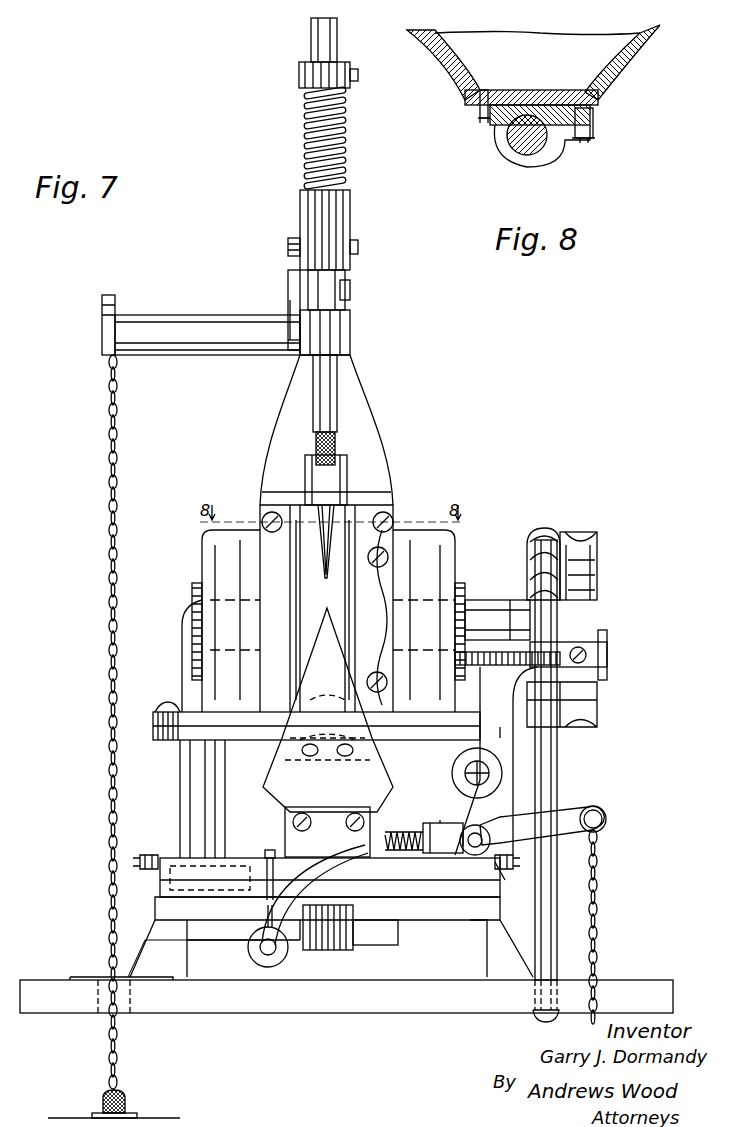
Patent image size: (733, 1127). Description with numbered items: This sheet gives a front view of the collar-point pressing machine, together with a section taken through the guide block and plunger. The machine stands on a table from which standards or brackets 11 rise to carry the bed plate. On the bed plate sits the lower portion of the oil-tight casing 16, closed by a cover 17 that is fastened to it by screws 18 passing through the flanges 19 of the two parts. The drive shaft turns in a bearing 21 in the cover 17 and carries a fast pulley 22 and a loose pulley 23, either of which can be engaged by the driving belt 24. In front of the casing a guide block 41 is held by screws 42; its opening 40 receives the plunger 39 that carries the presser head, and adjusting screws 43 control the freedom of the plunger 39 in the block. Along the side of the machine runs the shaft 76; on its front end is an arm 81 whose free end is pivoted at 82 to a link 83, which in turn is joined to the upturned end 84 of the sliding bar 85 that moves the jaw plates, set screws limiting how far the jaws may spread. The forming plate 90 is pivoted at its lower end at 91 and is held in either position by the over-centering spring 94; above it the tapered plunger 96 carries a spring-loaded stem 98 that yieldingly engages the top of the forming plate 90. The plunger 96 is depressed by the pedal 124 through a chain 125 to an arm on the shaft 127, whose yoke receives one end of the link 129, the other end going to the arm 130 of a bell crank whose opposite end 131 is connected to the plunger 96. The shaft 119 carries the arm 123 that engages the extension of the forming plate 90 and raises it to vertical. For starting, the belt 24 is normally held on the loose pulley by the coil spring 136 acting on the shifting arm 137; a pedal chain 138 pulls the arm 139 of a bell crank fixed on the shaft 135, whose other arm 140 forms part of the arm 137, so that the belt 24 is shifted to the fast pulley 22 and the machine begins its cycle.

In FIG. 7, the standards or brackets 11 is at (490, 943).
In FIG. 7, the oil-tight casing lower portion 16 is at (215, 790).
In FIG. 7, the cover 17 is at (205, 557).
In FIG. 8, the cover 17 is at (600, 92).
In FIG. 7, the screws 18 is at (165, 706).
In FIG. 7, the flanges 19 is at (156, 720).
In FIG. 7, the bearing 21 is at (476, 600).
In FIG. 7, the pulley 22 is at (567, 587).
In FIG. 7, the loose pulley 23 is at (533, 545).
In FIG. 7, the belt 24 is at (557, 762).
In FIG. 7, the plunger 39 is at (342, 482).
In FIG. 8, the plunger 39 is at (507, 140).
In FIG. 7, the opening 40 is at (266, 1012).
In FIG. 7, the guide block 41 is at (300, 573).
In FIG. 8, the guide block 41 is at (550, 160).
In FIG. 8, the screws 42 is at (476, 118).
In FIG. 7, the adjusting screws 43 is at (390, 560).
In FIG. 8, the adjusting screws 43 is at (595, 140).
In FIG. 7, the shaft 76 is at (480, 768).
In FIG. 7, the arm 81 is at (490, 838).
In FIG. 7, the pivot 82 is at (530, 826).
In FIG. 7, the link 83 is at (440, 818).
In FIG. 7, the upturned end 84 is at (440, 830).
In FIG. 7, the plate or bar 85 is at (290, 850).
In FIG. 7, the forming plate 90 is at (362, 749).
In FIG. 7, the pivot 91 is at (275, 852).
In FIG. 7, the over-centering spring 94 is at (395, 853).
In FIG. 7, the plunger 96 is at (330, 402).
In FIG. 7, the stem 98 is at (325, 581).
In FIG. 7, the shaft 119 is at (258, 952).
In FIG. 7, the arm 123 is at (300, 870).
In FIG. 7, the pedal 124 is at (127, 1102).
In FIG. 7, the chain 125 is at (160, 892).
In FIG. 7, the shaft 127 is at (104, 330).
In FIG. 7, the link 129 is at (290, 348).
In FIG. 7, the arm 130 is at (289, 304).
In FIG. 7, the bell crank end 131 is at (295, 246).
In FIG. 7, the shaft 135 is at (490, 882).
In FIG. 7, the coil spring 136 is at (470, 668).
In FIG. 7, the arm 137 is at (607, 648).
In FIG. 7, the chain 138 is at (598, 905).
In FIG. 7, the arm 139 is at (604, 812).
In FIG. 7, the arm 140 is at (505, 733).